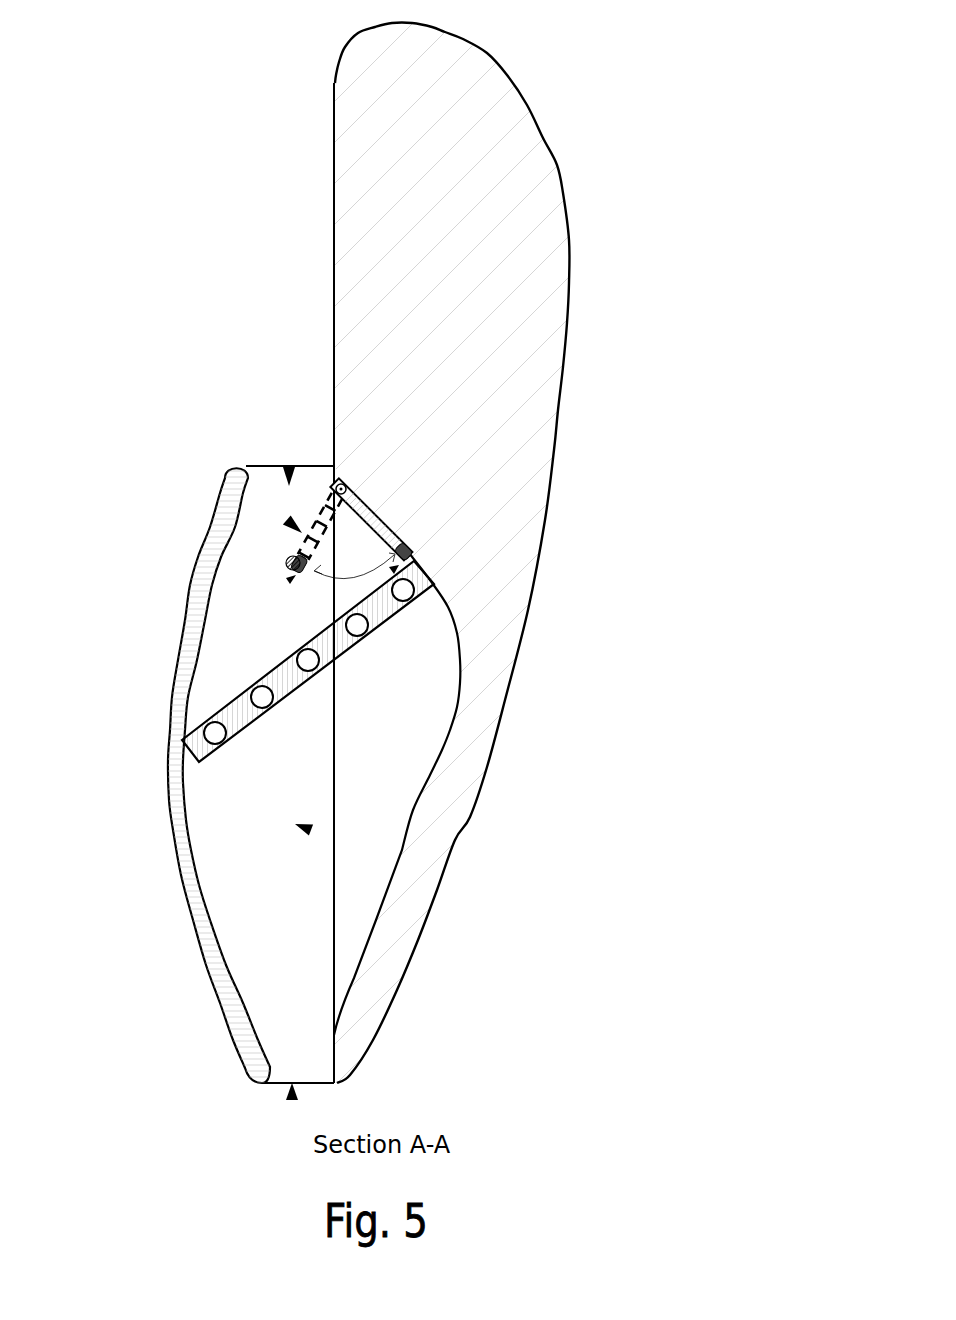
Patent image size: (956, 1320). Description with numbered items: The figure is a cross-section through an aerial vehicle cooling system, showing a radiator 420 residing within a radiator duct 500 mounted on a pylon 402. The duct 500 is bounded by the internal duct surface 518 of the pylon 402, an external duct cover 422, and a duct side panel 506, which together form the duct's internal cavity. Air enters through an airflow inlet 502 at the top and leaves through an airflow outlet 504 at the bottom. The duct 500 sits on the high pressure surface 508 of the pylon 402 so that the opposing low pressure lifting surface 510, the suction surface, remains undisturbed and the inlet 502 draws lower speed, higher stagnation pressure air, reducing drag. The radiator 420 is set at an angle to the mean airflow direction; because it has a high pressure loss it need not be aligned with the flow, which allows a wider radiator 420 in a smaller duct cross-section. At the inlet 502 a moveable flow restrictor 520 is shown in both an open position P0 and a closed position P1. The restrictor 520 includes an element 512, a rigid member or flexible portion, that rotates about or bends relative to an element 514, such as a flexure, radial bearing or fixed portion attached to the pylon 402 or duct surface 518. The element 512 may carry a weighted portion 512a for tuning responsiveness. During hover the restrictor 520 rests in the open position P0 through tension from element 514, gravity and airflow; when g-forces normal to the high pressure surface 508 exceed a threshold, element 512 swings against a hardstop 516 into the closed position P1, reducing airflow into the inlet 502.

The pylon 402 is at (510, 119).
The high pressure surface 508 is at (334, 188).
The low pressure lifting surface 510 is at (569, 262).
The element 514 is at (289, 466).
The airflow inlet 502 is at (288, 522).
The moveable flow restrictor 520 is at (298, 562).
The hardstop 516 is at (287, 562).
The element 512 is at (385, 525).
The weighted portion 512a is at (413, 550).
The closed position P1 is at (290, 580).
The open position P0 is at (393, 569).
The radiator 420 is at (283, 690).
The internal duct surface 518 is at (425, 807).
The radiator duct 500 is at (308, 830).
The duct side panel 506 is at (218, 832).
The external duct cover 422 is at (196, 935).
The airflow outlet 504 is at (290, 1098).